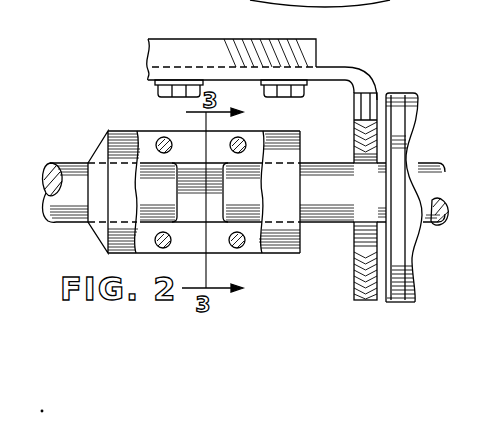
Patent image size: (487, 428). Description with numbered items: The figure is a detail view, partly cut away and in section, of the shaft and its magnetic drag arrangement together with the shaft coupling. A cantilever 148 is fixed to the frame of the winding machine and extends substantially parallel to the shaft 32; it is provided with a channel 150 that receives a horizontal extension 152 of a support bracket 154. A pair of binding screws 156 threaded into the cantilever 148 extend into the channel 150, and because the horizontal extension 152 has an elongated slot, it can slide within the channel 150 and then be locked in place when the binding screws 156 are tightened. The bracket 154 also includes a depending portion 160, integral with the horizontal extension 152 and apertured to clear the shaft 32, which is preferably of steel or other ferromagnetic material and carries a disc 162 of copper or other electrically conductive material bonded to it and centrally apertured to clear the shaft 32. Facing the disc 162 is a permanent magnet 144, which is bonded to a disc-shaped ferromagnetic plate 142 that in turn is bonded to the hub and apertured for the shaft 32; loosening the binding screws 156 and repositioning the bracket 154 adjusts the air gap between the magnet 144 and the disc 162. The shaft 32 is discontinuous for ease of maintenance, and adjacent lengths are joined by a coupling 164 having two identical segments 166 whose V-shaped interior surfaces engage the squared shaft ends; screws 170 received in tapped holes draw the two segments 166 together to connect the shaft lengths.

The shaft 32 is at (55, 207).
The plate 142 is at (408, 230).
The permanent magnet 144 is at (398, 128).
The cantilever 148 is at (138, 48).
The channel 150 is at (198, 55).
The horizontal extension 152 is at (341, 78).
The support bracket 154 is at (377, 71).
The binding screws 156 is at (155, 90).
The depending portion 160 is at (372, 93).
The disc 162 is at (354, 270).
The coupling 164 is at (132, 118).
The segments 166 is at (292, 158).
The screws 170 is at (241, 250).